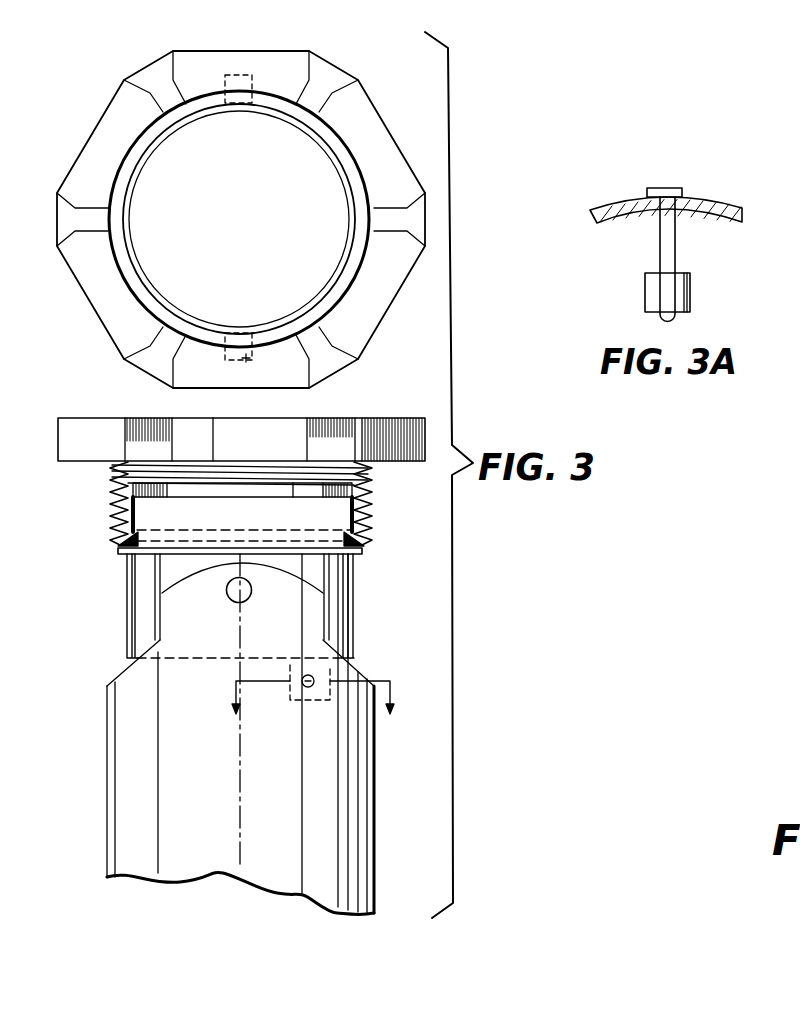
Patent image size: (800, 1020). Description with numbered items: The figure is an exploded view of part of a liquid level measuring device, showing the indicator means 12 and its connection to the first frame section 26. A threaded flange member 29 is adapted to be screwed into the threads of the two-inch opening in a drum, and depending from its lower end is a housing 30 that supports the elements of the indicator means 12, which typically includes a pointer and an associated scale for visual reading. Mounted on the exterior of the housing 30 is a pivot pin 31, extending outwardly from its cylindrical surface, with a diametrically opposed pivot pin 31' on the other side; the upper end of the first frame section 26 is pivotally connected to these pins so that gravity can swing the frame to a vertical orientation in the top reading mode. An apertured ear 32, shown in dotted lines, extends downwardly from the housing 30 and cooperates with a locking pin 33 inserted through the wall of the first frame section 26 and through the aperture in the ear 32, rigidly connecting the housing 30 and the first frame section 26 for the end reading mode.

In FIG. 3, the indicator means 12 is at (300, 494).
In FIG. 3, the first frame section 26 is at (115, 682).
In FIG. 3A, the first frame section 26 is at (720, 202).
In FIG. 3, the threaded flange member 29 is at (390, 312).
In FIG. 3, the housing 30 is at (353, 572).
In FIG. 3, the pivot pin 31 is at (264, 486).
In FIG. 3, the pivot pin 31' is at (264, 80).
In FIG. 3, the apertured ear 32 is at (331, 693).
In FIG. 3A, the apertured ear 32 is at (690, 283).
In FIG. 3A, the locking pin 33 is at (676, 243).